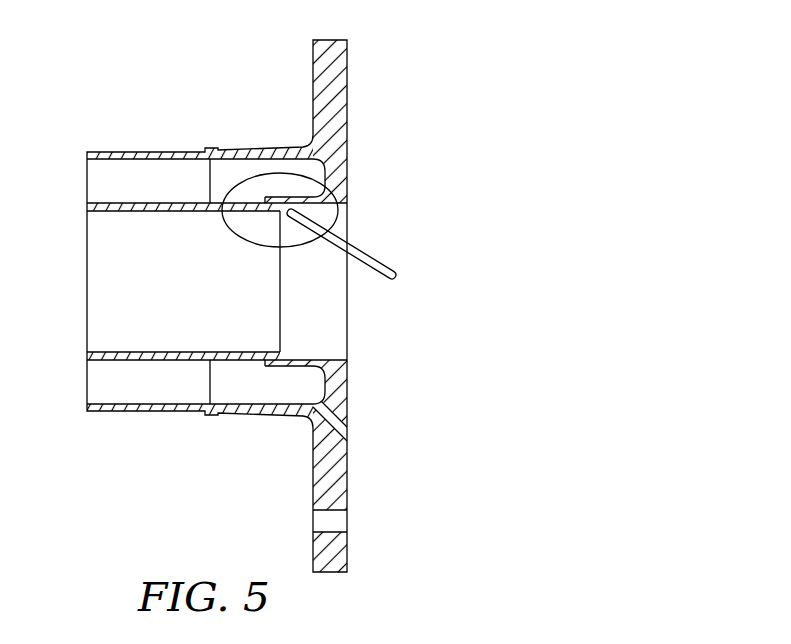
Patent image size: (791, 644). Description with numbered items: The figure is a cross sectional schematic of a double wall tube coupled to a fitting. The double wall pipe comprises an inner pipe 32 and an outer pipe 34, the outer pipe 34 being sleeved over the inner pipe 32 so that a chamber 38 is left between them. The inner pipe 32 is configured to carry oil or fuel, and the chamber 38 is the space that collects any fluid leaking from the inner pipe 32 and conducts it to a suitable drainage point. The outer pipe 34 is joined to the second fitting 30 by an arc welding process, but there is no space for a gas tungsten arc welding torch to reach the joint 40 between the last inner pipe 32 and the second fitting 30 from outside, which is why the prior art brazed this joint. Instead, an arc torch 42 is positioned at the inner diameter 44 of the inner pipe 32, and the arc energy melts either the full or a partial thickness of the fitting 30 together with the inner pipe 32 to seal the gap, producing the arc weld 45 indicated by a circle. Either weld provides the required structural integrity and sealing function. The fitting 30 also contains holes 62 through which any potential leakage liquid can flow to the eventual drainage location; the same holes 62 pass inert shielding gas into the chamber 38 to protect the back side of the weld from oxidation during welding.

The second fitting 30 is at (347, 63).
The inner pipe 32 is at (104, 206).
The outer pipe 34 is at (138, 152).
The chamber 38 is at (180, 193).
The joint 40 is at (263, 196).
The arc torch 42 is at (358, 249).
The inner diameter 44 is at (290, 346).
The arc weld 45 is at (338, 220).
The holes 62 is at (348, 423).